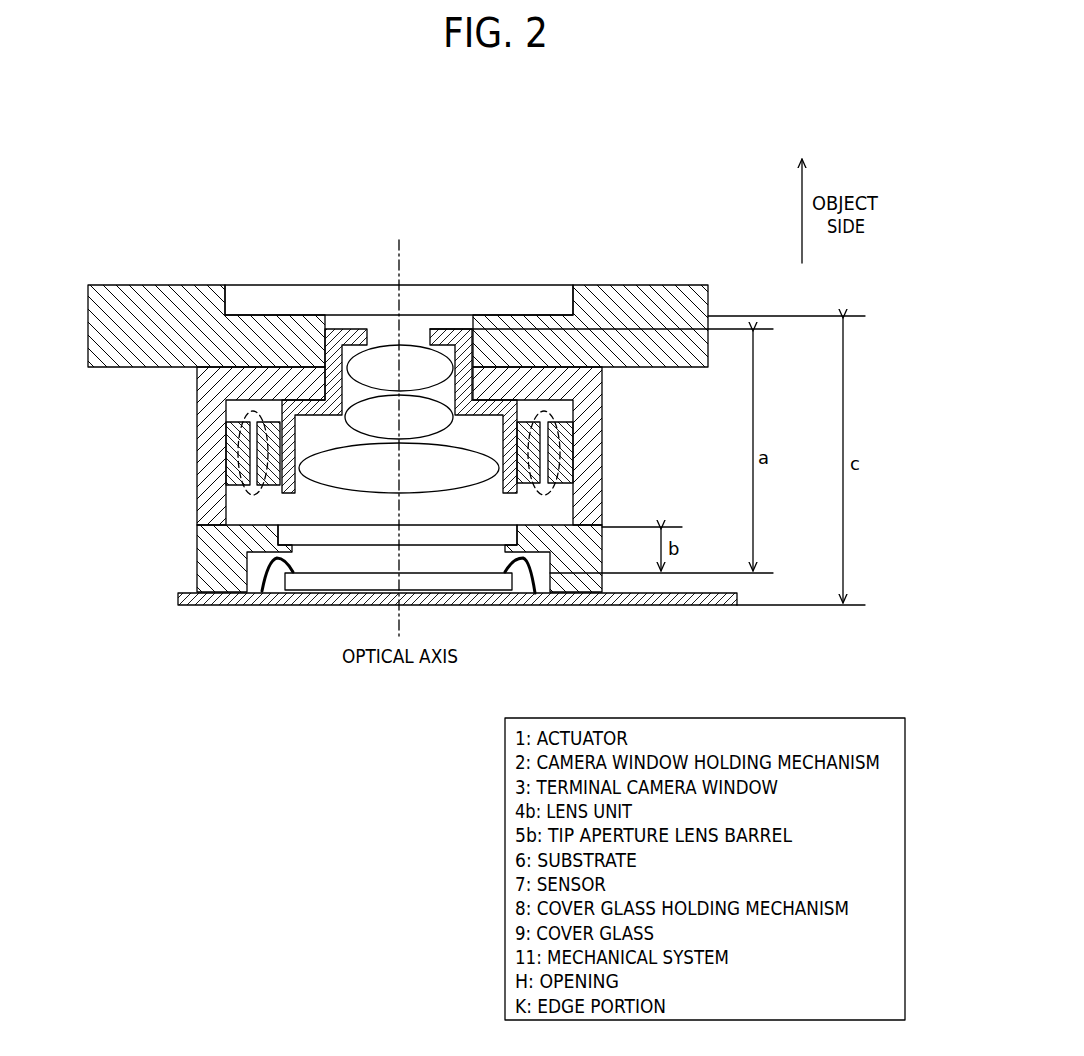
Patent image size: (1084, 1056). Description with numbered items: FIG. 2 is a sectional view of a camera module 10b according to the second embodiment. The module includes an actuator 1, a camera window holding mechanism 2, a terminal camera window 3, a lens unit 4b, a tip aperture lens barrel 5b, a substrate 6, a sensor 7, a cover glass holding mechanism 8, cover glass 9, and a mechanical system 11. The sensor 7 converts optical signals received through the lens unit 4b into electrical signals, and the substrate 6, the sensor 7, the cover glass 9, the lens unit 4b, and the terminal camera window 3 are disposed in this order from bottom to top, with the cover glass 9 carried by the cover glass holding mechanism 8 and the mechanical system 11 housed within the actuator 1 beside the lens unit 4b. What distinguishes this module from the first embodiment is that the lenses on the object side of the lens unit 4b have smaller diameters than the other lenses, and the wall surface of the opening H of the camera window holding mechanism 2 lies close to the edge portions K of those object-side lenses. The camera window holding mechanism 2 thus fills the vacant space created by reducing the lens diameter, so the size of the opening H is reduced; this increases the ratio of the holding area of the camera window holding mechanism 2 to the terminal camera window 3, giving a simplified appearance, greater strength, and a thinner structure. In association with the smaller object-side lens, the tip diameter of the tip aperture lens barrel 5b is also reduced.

The actuator 1 is at (198, 403).
The camera window holding mechanism 2 is at (133, 296).
The terminal camera window 3 is at (339, 297).
The lens unit 4b is at (423, 465).
The tip aperture lens barrel 5b is at (335, 333).
The substrate 6 is at (245, 606).
The sensor 7 is at (315, 591).
The cover glass holding mechanism 8 is at (197, 562).
The cover glass 9 is at (487, 536).
The camera module 10b is at (649, 178).
The mechanical system 11 is at (230, 452).
The opening H is at (383, 330).
The edge portions K is at (318, 335).